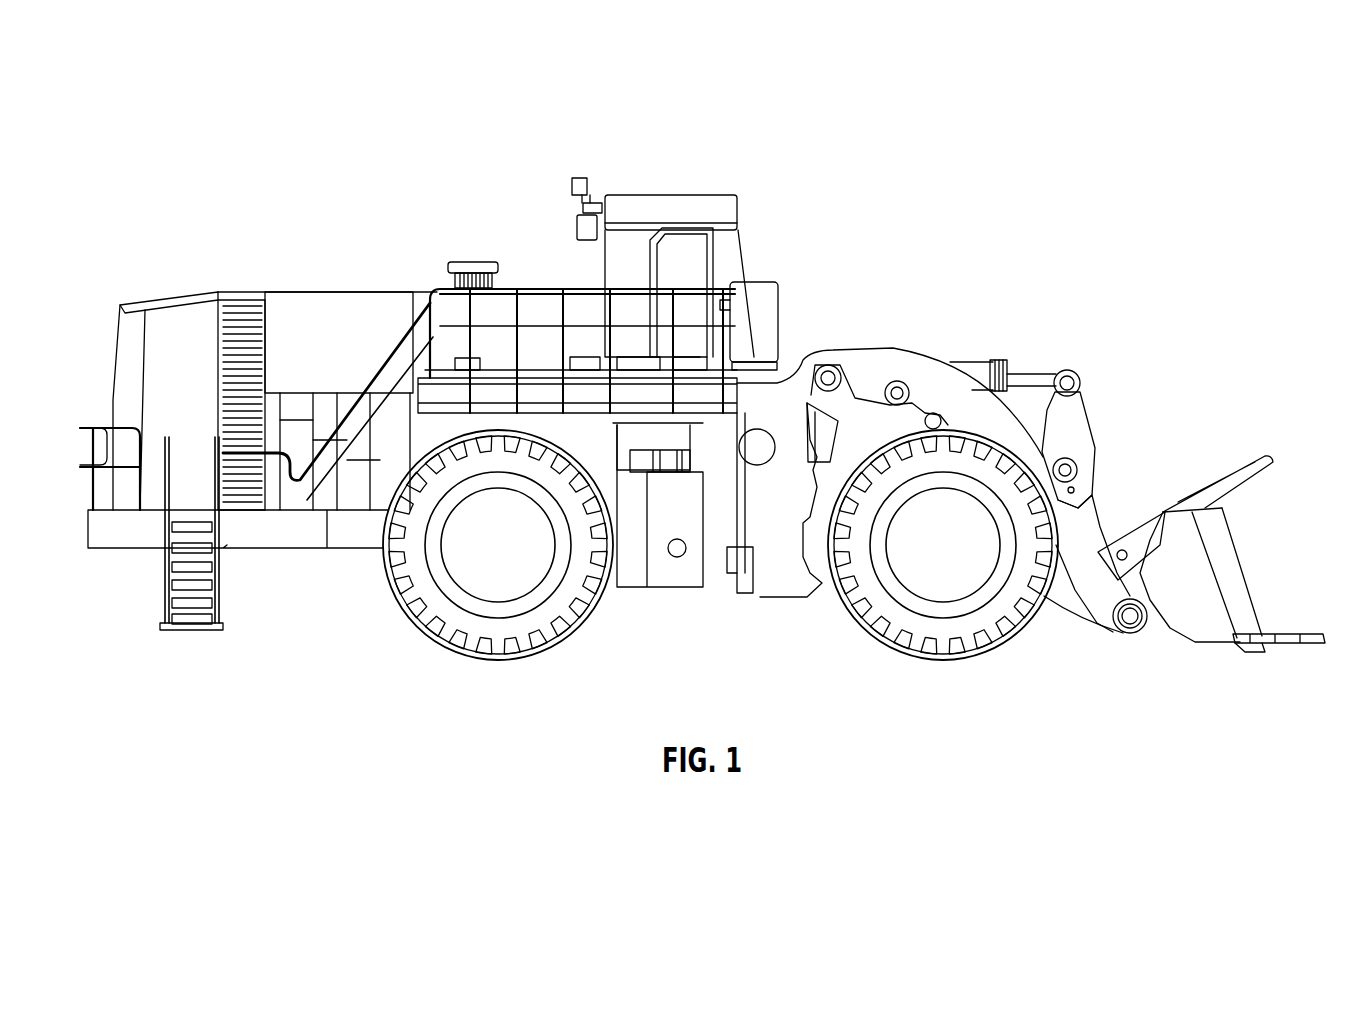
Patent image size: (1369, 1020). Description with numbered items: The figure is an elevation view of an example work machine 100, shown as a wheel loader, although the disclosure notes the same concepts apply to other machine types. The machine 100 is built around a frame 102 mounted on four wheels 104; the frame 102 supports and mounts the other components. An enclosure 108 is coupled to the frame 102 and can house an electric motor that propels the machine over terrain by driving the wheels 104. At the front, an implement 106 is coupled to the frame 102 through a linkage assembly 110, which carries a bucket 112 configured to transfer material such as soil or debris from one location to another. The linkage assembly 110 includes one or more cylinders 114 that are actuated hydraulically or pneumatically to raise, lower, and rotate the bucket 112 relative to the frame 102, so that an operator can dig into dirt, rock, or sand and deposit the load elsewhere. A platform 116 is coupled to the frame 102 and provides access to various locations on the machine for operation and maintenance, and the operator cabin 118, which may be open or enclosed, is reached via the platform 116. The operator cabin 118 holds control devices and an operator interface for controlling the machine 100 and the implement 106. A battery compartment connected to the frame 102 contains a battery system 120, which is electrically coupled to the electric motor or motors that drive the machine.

The machine 100 is at (434, 126).
The frame 102 is at (127, 546).
The wheels 104 is at (458, 657).
The implement 106 is at (1130, 344).
The enclosure 108 is at (180, 292).
The linkage assembly 110 is at (1080, 437).
The bucket 112 is at (1220, 637).
The cylinders 114 is at (978, 368).
The platform 116 is at (587, 367).
The operator cabin 118 is at (725, 208).
The battery system 120 is at (677, 577).